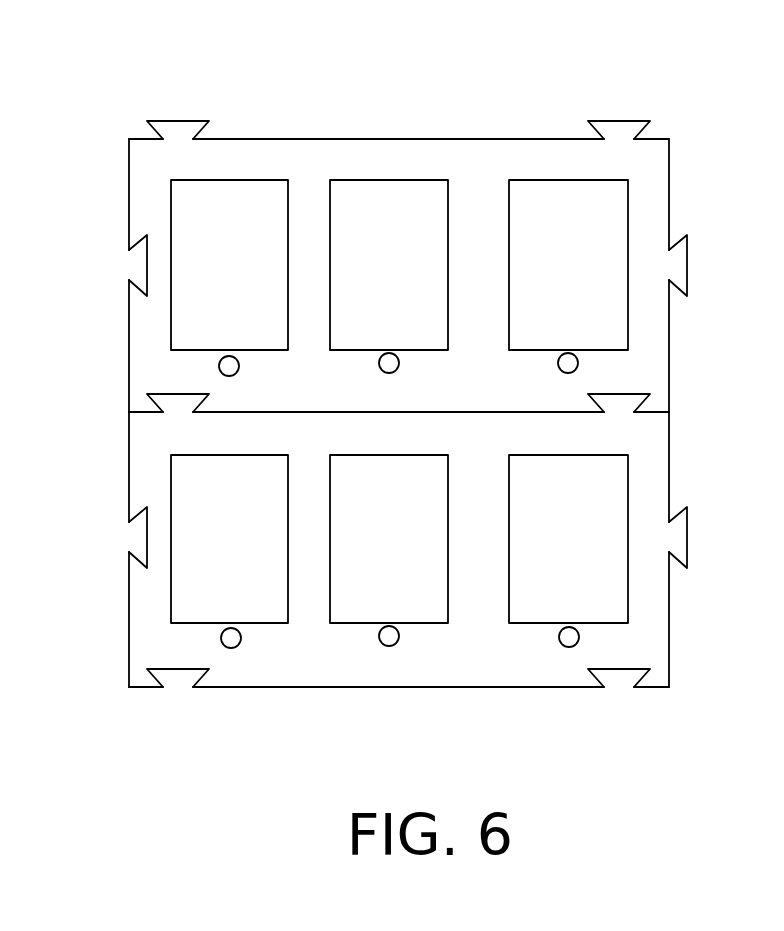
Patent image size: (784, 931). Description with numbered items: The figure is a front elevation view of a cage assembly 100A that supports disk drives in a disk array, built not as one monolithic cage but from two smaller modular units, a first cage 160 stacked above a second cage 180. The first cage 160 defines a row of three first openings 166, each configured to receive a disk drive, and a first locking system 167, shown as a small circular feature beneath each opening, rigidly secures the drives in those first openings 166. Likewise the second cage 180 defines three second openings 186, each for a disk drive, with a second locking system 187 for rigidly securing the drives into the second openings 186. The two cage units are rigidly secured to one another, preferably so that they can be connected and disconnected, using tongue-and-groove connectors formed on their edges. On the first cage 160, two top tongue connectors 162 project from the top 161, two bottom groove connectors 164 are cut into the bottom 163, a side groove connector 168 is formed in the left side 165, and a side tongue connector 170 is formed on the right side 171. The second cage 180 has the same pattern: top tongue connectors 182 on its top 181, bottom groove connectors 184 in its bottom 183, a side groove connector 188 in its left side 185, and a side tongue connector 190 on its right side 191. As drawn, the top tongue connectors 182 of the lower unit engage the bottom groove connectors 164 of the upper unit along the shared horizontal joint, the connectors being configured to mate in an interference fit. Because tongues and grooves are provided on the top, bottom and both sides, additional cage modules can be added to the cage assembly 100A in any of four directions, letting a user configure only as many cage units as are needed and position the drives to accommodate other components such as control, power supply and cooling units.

The cage assembly 100A is at (427, 58).
The first cage 160 is at (385, 242).
The top 161 is at (343, 138).
The top tongue connectors 162 is at (180, 130).
The bottom 163 is at (448, 410).
The bottom groove connectors 164 is at (199, 397).
The left side 165 is at (128, 222).
The first openings 166 is at (360, 189).
The first locking system 167 is at (378, 363).
The side groove connector 168 is at (141, 266).
The side tongue connector 170 is at (680, 270).
The right side 171 is at (671, 183).
The second cage 180 is at (404, 572).
The top 181 is at (480, 414).
The top tongue connectors 182 is at (180, 402).
The bottom 183 is at (390, 688).
The bottom groove connectors 184 is at (178, 682).
The left side 185 is at (129, 463).
The second openings 186 is at (362, 462).
The second locking system 187 is at (378, 638).
The side groove connector 188 is at (145, 543).
The side tongue connector 190 is at (680, 545).
The right side 191 is at (671, 467).